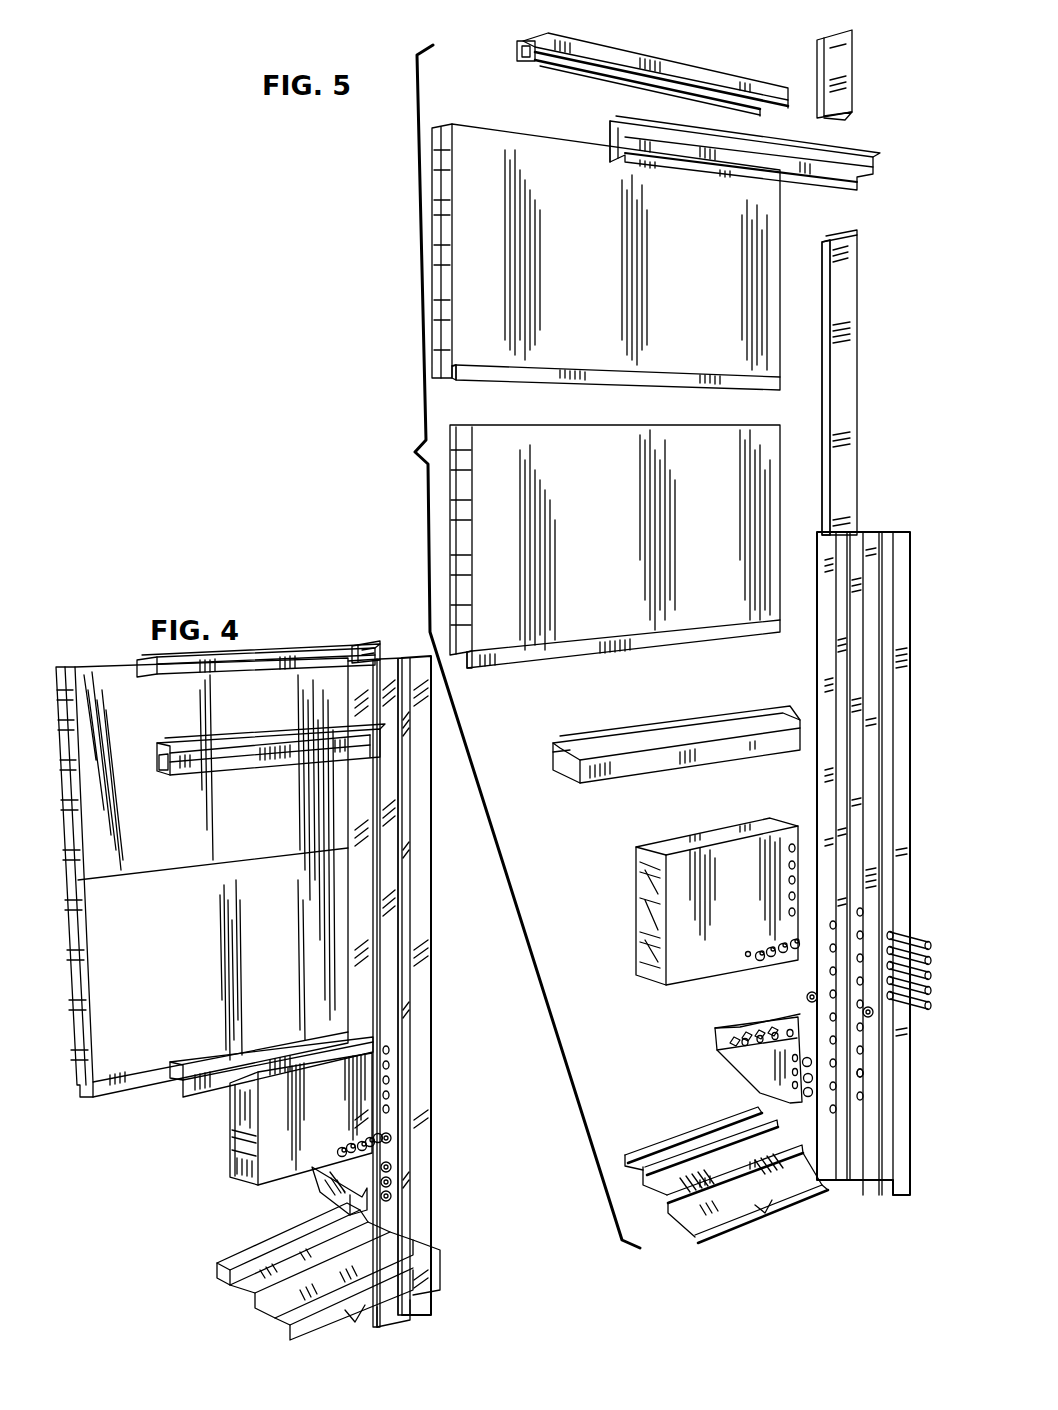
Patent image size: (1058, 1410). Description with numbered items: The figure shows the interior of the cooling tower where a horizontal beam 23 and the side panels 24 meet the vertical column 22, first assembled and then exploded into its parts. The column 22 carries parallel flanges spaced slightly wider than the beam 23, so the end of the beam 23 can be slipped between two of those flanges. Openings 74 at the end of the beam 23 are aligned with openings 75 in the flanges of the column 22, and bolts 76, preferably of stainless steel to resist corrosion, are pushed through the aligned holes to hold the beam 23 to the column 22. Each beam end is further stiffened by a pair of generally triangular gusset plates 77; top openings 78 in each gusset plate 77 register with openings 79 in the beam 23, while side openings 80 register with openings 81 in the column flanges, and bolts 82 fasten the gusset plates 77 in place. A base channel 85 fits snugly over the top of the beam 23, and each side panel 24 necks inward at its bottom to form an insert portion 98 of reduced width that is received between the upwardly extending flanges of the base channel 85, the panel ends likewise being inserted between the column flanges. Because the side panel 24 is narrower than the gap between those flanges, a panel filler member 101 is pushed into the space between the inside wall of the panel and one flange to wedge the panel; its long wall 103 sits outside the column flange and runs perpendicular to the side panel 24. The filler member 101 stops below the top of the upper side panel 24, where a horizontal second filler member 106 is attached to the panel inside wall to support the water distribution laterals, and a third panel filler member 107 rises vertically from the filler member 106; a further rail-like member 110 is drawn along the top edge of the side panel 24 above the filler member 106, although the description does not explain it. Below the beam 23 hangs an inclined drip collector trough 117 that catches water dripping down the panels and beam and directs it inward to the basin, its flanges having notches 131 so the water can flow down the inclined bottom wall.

In FIG. 5, the column 22 is at (885, 532).
In FIG. 4, the column 22 is at (431, 1092).
In FIG. 5, the beam 23 is at (636, 870).
In FIG. 4, the beam 23 is at (228, 1115).
In FIG. 5, the side panel 24 is at (590, 246).
In FIG. 4, the side panel 24 is at (168, 846).
In FIG. 5, the openings 74 is at (788, 878).
In FIG. 5, the openings 75 is at (858, 940).
In FIG. 5, the bolts 76 is at (897, 1005).
In FIG. 4, the bolts 76 is at (392, 1052).
In FIG. 5, the gusset plate 77 is at (735, 1068).
In FIG. 4, the gusset plate 77 is at (322, 1182).
In FIG. 5, the top openings 78 is at (745, 1045).
In FIG. 5, the openings 79 is at (748, 958).
In FIG. 5, the side openings 80 is at (795, 1084).
In FIG. 5, the openings 81 is at (862, 1070).
In FIG. 4, the bolts 82 is at (388, 1168).
In FIG. 5, the base channel 85 is at (636, 765).
In FIG. 4, the base channel 85 is at (182, 1082).
In FIG. 5, the insert portion 98 is at (440, 380).
In FIG. 5, the panel filler member 101 is at (846, 297).
In FIG. 4, the panel filler member 101 is at (375, 952).
In FIG. 5, the wall 103 is at (845, 404).
In FIG. 4, the wall 103 is at (365, 896).
In FIG. 5, the second filler member 106 is at (845, 188).
In FIG. 4, the second filler member 106 is at (313, 757).
In FIG. 5, the third panel filler member 107 is at (848, 68).
In FIG. 4, the third panel filler member 107 is at (358, 668).
In FIG. 5, the top rail 110 is at (520, 48).
In FIG. 4, the top rail 110 is at (278, 654).
In FIG. 5, the drip collector trough 117 is at (700, 1240).
In FIG. 4, the drip collector trough 117 is at (255, 1292).
In FIG. 5, the notches 131 is at (768, 1210).
In FIG. 4, the notches 131 is at (355, 1318).